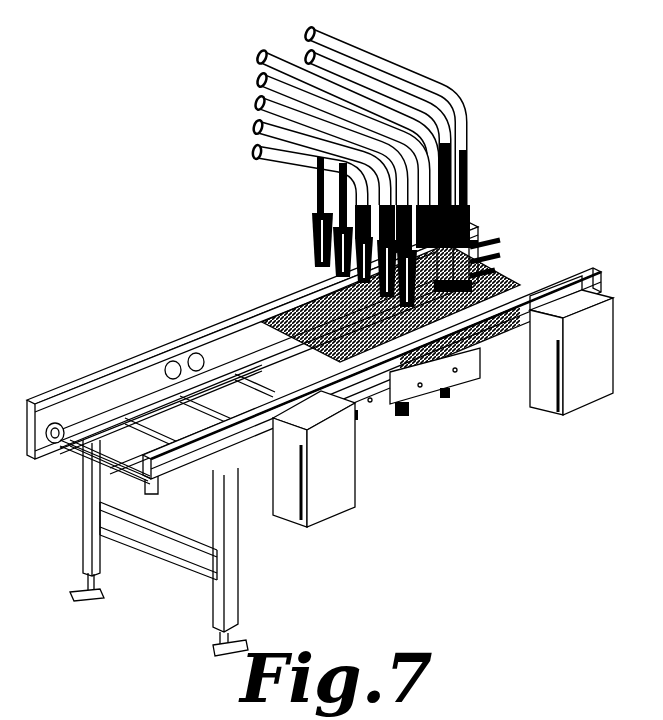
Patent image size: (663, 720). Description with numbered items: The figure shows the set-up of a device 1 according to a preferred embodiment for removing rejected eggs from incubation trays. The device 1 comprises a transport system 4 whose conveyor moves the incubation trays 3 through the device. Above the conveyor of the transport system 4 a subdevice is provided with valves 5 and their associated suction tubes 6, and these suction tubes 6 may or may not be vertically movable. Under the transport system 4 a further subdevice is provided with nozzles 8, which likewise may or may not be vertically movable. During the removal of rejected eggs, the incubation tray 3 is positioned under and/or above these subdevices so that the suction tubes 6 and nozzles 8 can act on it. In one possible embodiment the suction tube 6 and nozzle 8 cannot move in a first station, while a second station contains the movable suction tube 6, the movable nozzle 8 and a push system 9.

The device 1 is at (590, 109).
The incubation tray 3 is at (267, 313).
The transport system 4 is at (217, 333).
The valves 5 is at (483, 298).
The suction tubes 6 is at (458, 240).
The nozzles 8 is at (423, 424).
The push system 9 is at (361, 459).